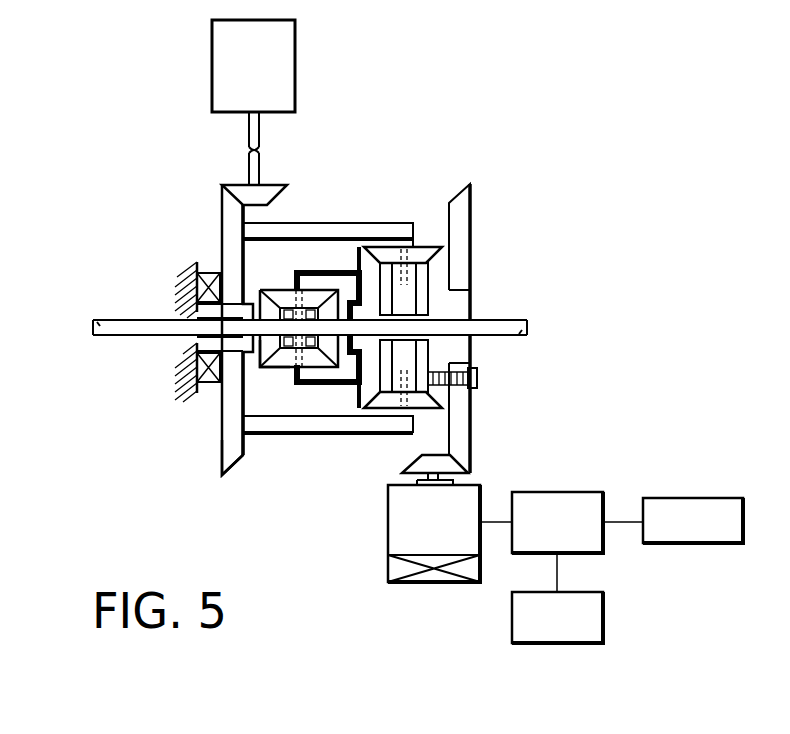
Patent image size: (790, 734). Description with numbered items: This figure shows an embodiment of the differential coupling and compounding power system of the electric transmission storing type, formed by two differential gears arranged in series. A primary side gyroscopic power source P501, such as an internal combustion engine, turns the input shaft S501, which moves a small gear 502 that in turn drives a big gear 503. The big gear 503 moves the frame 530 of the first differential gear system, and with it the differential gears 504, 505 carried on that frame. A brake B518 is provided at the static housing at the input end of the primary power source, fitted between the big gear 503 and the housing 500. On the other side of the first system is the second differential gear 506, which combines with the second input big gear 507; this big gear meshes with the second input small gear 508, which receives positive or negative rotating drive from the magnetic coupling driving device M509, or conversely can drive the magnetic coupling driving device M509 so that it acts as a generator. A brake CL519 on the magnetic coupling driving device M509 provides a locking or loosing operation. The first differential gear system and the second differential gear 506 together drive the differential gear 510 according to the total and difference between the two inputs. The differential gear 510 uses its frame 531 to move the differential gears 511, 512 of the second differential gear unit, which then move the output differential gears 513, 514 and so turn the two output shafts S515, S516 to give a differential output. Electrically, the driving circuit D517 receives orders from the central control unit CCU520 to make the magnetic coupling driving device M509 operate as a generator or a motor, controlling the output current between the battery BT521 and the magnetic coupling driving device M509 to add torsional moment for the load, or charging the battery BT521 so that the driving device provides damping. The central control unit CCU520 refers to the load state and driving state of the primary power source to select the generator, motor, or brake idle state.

The primary side gyroscopic power source P501 is at (253, 66).
The input shaft S501 is at (250, 130).
The small gear 502 is at (237, 188).
The big gear 503 is at (227, 215).
The frame 530 is at (260, 428).
The brake B518 is at (200, 268).
The housing 500 is at (180, 292).
The output shaft S515 is at (120, 328).
The output shaft S516 is at (505, 338).
The differential gear 511 is at (268, 283).
The differential gear 512 is at (260, 377).
The output differential gear 513 is at (258, 362).
The frame 531 is at (335, 268).
The differential gear 510 is at (362, 260).
The output differential gear 514 is at (338, 384).
The differential gear 504 is at (418, 252).
The differential gear 505 is at (383, 403).
The second differential gear 506 is at (442, 275).
The second input big gear 507 is at (460, 445).
The second input small gear 508 is at (420, 465).
The magnetic coupling driving device M509 is at (450, 533).
The brake CL519 is at (433, 573).
The driving circuit D517 is at (577, 542).
The central control unit CCU520 is at (693, 520).
The battery BT521 is at (557, 617).